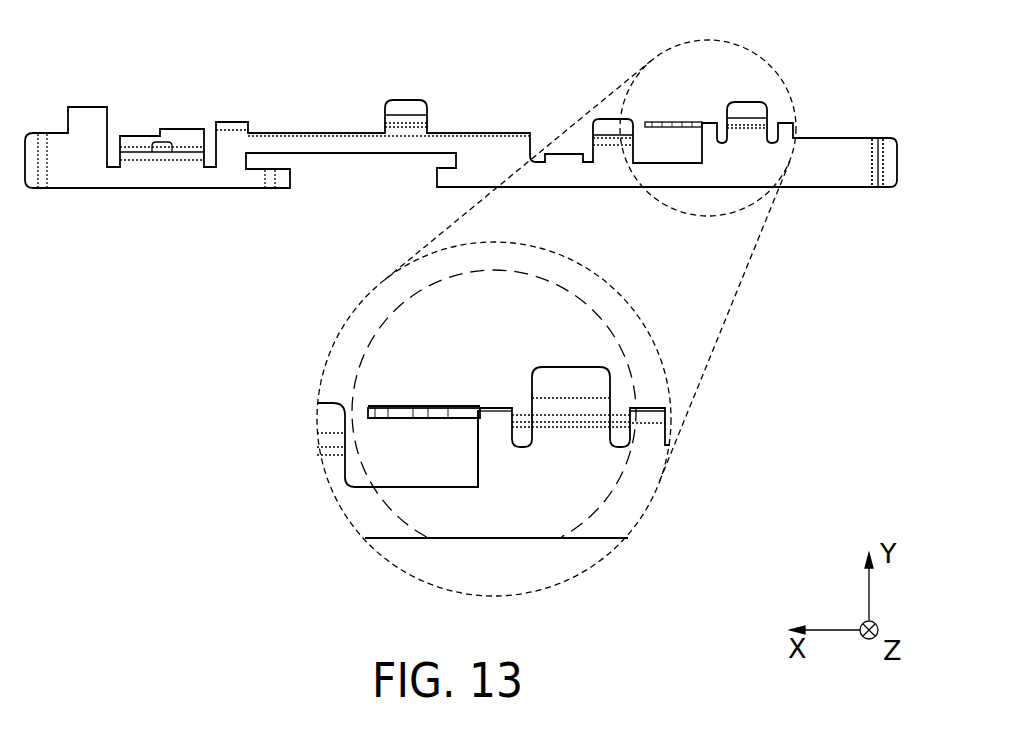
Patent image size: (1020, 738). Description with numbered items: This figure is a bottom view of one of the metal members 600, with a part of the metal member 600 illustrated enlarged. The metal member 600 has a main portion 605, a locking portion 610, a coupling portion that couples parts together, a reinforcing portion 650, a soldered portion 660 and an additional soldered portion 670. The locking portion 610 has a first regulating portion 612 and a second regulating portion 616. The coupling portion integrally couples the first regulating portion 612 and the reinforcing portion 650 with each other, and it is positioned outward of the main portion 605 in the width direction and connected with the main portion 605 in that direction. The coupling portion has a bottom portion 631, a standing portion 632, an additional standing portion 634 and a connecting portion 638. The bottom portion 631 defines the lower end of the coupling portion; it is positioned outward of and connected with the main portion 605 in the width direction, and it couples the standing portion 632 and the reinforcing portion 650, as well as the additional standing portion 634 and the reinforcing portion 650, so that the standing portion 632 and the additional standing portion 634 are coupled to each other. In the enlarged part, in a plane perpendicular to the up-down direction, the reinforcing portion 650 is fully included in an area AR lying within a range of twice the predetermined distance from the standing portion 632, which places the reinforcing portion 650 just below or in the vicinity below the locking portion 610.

The metal member 600 is at (191, 52).
The locking portion 610 is at (683, 122).
The first regulating portion 612 is at (448, 416).
The second regulating portion 616 is at (427, 397).
The bottom portion 631 is at (567, 463).
The standing portion 632 is at (495, 413).
The additional standing portion 634 is at (648, 418).
The connecting portion 638 is at (614, 414).
The reinforcing portion 650 is at (570, 384).
The soldered portion 660 is at (335, 419).
The additional soldered portion 670 is at (890, 177).
The main portion 605 is at (545, 507).
The area AR is at (403, 307).